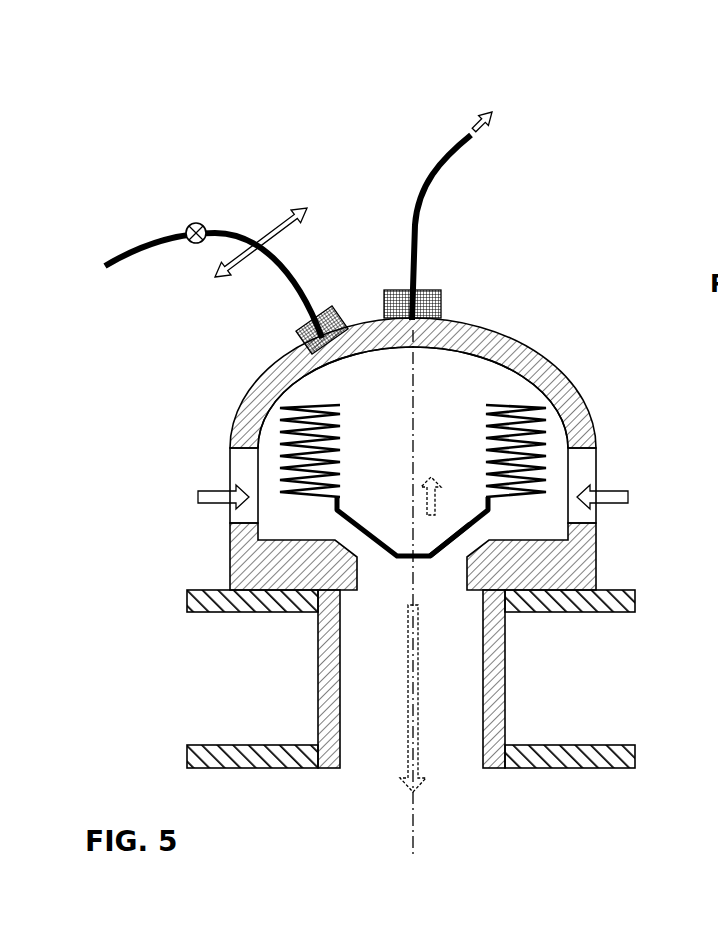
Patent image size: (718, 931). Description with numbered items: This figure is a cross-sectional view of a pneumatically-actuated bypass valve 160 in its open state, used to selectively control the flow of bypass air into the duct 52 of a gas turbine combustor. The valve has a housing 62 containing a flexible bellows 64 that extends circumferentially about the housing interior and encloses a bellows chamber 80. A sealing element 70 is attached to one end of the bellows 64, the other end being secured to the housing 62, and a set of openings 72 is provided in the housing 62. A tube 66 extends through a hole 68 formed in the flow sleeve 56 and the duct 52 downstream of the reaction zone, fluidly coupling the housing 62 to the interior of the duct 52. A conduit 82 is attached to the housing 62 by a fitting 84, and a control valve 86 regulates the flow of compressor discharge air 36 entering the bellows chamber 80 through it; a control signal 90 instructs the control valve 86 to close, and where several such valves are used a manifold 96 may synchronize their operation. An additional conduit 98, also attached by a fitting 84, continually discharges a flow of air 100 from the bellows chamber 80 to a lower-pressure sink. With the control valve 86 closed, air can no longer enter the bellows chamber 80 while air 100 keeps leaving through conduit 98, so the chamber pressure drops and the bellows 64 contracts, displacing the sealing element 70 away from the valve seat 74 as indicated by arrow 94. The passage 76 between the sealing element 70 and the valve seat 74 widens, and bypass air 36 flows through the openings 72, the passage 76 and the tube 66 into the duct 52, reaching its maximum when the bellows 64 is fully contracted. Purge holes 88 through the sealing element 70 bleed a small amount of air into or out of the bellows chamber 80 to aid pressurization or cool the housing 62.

The bypass valve 160 is at (273, 148).
The control signal 90 is at (193, 220).
The control valve 86 is at (204, 224).
The manifold 96 is at (290, 205).
The conduit 82 is at (290, 268).
The additional conduit 98 is at (422, 215).
The flow of air 100 is at (482, 128).
The fitting 84 is at (300, 322).
The housing 62 is at (518, 345).
The bellows 64 is at (268, 392).
The bellows chamber 80 is at (448, 422).
The openings 72 is at (226, 468).
The compressor discharge air 36 is at (410, 652).
The sealing element 70 is at (367, 520).
The arrow 94 is at (436, 497).
The passage 76 is at (330, 528).
The purge holes 88 is at (447, 553).
The valve seat 74 is at (350, 546).
The tube 66 is at (482, 697).
The flow sleeve 56 is at (556, 613).
The duct 52 is at (548, 770).
The hole 68 is at (354, 772).